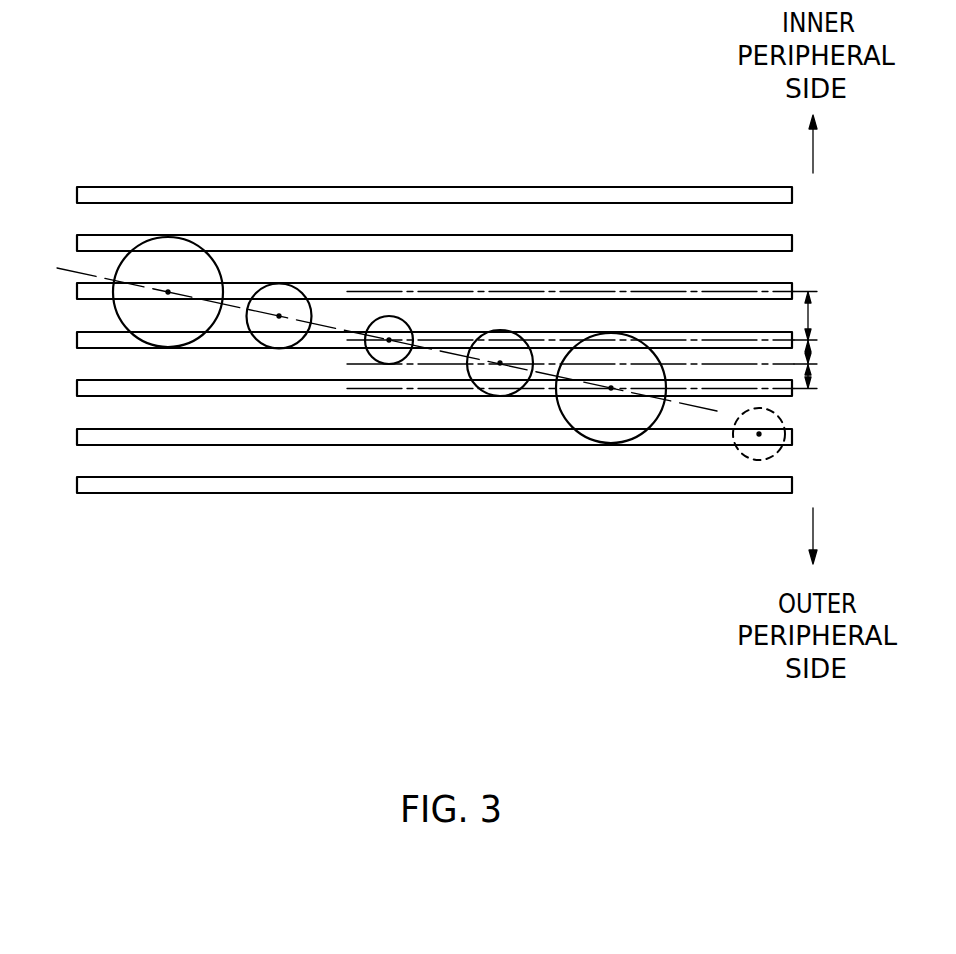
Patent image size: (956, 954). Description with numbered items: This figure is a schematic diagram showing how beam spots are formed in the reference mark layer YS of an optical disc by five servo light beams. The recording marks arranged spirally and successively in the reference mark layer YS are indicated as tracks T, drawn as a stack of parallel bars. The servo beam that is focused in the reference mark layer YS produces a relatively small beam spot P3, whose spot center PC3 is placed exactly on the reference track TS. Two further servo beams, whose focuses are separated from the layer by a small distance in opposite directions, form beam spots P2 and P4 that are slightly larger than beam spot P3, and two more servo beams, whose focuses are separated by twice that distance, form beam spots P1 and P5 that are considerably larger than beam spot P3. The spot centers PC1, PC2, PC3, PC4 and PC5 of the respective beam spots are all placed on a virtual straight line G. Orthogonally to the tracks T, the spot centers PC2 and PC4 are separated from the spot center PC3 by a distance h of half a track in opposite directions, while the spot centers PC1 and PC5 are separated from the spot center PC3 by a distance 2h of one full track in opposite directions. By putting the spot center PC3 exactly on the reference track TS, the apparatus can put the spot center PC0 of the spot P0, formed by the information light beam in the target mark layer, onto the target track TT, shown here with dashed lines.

The reference mark layer YS is at (80, 112).
The tracks T is at (77, 196).
The reference track TS is at (78, 349).
The target track TT is at (78, 446).
The spot center PC5 is at (168, 292).
The spot center PC4 is at (279, 316).
The spot center PC3 is at (389, 340).
The spot center PC2 is at (500, 363).
The spot center PC1 is at (611, 388).
The spot center PC0 is at (759, 436).
The beam spot P5 is at (138, 348).
The beam spot P4 is at (248, 348).
The beam spot P3 is at (363, 363).
The beam spot P2 is at (463, 395).
The beam spot P1 is at (560, 403).
The spot P0 is at (736, 449).
The virtual straight line G is at (687, 403).
The distance of a track 2h is at (810, 312).
The distance of a half of a track h is at (810, 352).